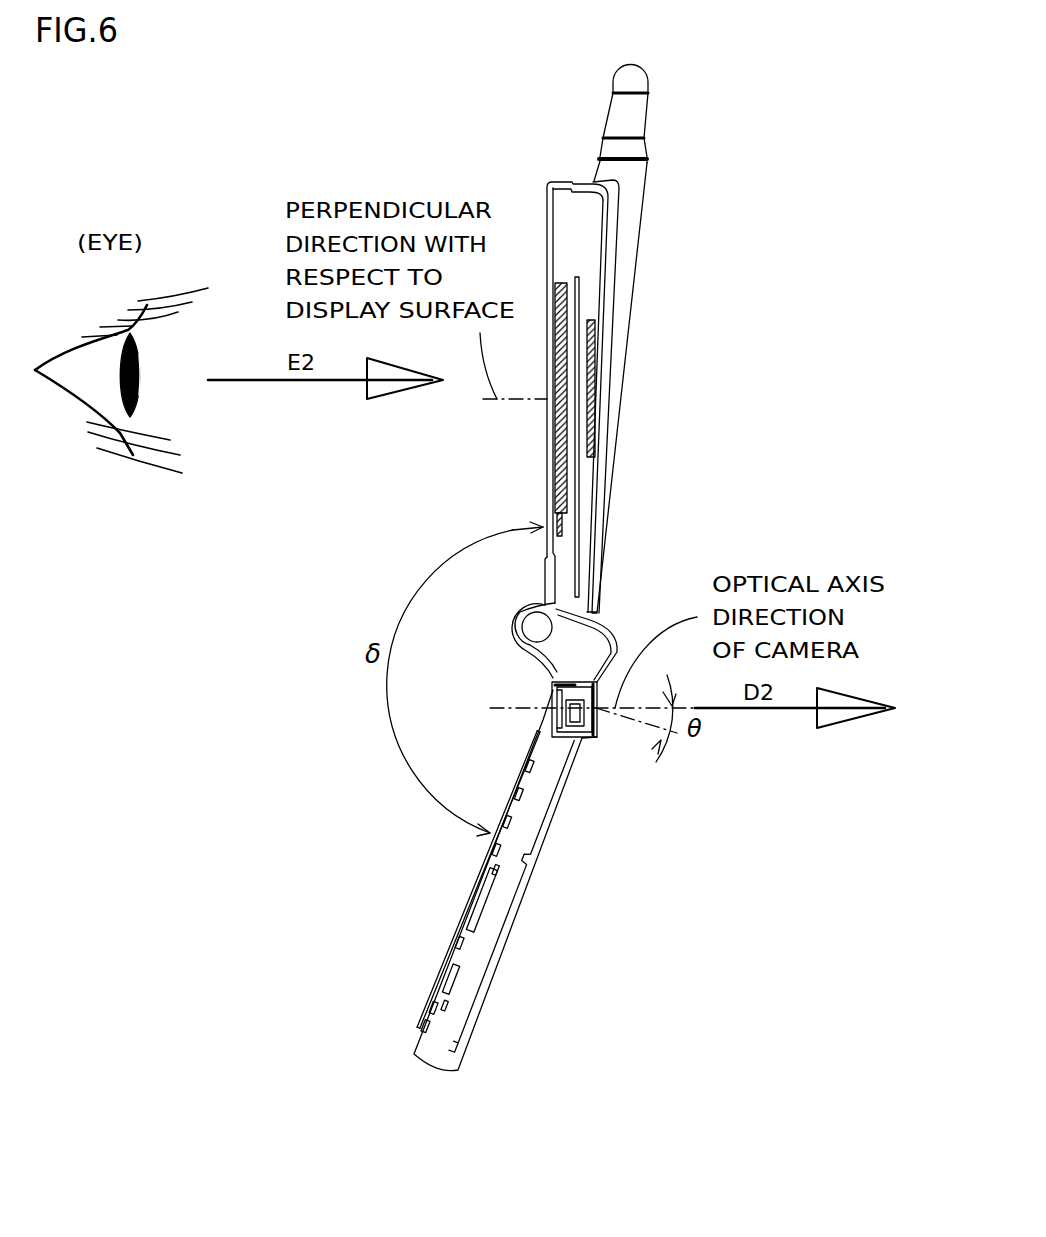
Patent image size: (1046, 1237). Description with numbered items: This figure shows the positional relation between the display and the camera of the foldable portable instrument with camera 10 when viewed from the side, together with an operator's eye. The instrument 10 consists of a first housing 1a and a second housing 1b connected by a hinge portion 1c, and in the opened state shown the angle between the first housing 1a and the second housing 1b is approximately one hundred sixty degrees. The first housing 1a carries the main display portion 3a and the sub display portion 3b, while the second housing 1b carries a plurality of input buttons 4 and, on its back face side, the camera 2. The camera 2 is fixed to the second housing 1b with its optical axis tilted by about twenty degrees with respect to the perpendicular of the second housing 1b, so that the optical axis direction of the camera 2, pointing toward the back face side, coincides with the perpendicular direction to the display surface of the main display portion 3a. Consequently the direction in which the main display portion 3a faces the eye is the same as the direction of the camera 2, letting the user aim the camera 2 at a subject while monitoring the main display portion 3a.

The foldable portable instrument with camera 10 is at (705, 160).
The first housing 1a is at (622, 313).
The second housing 1b is at (565, 788).
The hinge portion 1c is at (537, 624).
The camera 2 is at (585, 740).
The main display portion 3a is at (555, 466).
The sub display portion 3b is at (594, 363).
The input buttons 4 is at (428, 859).